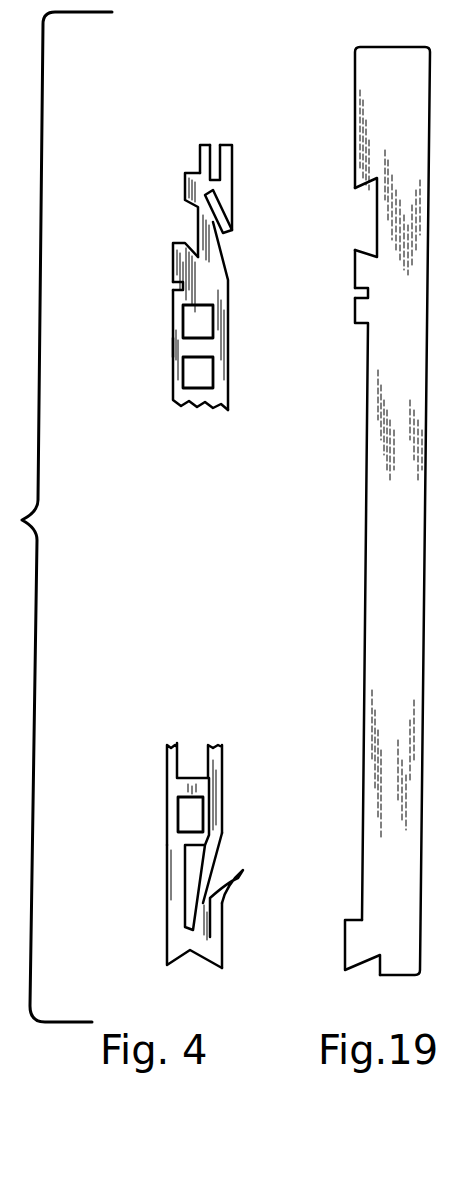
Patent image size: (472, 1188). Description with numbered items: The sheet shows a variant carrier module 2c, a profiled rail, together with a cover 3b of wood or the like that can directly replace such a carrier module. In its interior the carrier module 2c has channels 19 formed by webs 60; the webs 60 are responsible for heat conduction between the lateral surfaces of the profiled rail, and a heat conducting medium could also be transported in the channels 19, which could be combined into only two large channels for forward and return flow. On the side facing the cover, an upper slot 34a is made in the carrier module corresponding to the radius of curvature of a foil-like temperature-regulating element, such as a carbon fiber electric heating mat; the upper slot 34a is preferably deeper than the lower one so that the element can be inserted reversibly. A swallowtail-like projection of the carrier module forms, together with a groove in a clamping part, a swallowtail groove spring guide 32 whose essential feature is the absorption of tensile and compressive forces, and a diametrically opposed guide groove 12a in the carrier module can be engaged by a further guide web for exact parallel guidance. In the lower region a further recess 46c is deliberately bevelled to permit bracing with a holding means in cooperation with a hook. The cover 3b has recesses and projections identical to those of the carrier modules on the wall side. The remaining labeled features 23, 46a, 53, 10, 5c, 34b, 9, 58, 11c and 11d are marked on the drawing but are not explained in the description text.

In FIG. 4, the top prong 23 is at (206, 143).
In FIG. 4, the guide groove 12a is at (214, 147).
In FIG. 4, the swallowtail groove spring guide 32 is at (187, 187).
In FIG. 4, the upper slot 34a is at (232, 208).
In FIG. 4, the groove 46a is at (178, 238).
In FIG. 4, the notch 53 is at (177, 284).
In FIG. 19, the notch 53 is at (355, 293).
In FIG. 4, the carrier module 2c is at (176, 337).
In FIG. 4, the channels 19 is at (198, 377).
In FIG. 4, the webs 60 is at (197, 347).
In FIG. 4, the clip body 10 is at (178, 223).
In FIG. 4, the slotted upper part 5c is at (167, 790).
In FIG. 4, the inclined strut 34b is at (206, 890).
In FIG. 4, the hook finger 9 is at (236, 890).
In FIG. 4, the side edge 58 is at (225, 940).
In FIG. 4, the further recess 46c is at (188, 960).
In FIG. 19, the cover 3b is at (383, 510).
In FIG. 19, the upper tooth 11c is at (362, 220).
In FIG. 19, the lower tooth 11d is at (367, 970).